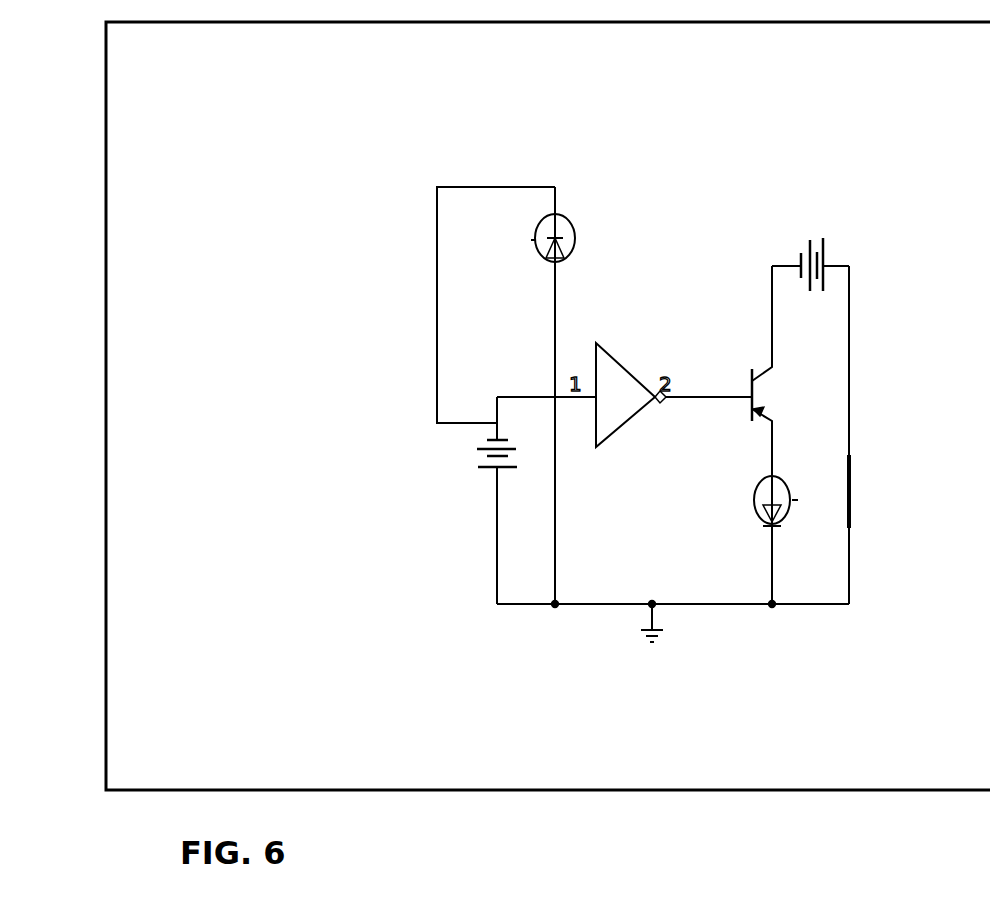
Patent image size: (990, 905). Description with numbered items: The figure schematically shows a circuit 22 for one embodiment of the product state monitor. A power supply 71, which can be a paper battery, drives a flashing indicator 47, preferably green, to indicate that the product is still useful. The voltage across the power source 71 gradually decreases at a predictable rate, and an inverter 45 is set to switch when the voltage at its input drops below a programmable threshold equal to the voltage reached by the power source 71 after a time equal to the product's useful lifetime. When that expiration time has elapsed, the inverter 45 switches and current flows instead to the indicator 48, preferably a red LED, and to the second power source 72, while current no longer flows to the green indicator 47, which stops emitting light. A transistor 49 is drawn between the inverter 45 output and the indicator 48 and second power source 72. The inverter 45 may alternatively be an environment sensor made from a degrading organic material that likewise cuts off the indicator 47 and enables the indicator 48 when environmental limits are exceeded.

The circuit 22 is at (647, 814).
The inverter 45 is at (613, 352).
The flashing indicator 47 is at (570, 206).
The indicator 48 is at (750, 500).
The transistor 49 is at (757, 366).
The power supply 71 is at (477, 456).
The second power source 72 is at (818, 238).